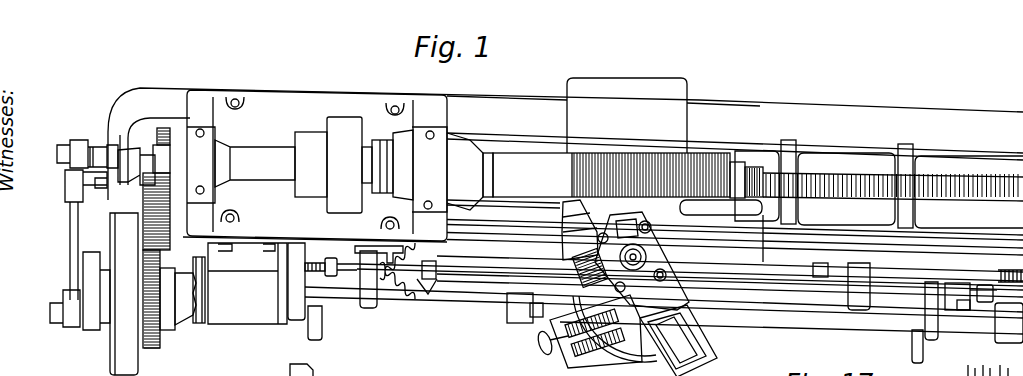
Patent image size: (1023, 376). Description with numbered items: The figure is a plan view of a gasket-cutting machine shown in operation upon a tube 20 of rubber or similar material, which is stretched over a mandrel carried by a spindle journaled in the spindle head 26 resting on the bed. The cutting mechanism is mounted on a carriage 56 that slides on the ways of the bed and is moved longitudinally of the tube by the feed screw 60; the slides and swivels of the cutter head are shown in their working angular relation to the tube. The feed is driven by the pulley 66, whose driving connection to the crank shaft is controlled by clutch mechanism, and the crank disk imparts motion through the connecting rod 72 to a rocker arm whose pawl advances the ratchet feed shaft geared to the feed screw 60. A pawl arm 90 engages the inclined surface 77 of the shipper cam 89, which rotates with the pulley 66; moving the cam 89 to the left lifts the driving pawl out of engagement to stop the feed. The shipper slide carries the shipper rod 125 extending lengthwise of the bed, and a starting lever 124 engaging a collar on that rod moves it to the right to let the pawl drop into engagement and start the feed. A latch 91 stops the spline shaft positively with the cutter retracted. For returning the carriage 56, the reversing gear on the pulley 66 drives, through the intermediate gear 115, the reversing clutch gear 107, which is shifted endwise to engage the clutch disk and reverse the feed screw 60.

The tube 20 is at (510, 163).
The spindle head 26 is at (278, 108).
The carriage 56 is at (627, 115).
The feed screw 60 is at (940, 175).
The pulley 66 is at (118, 343).
The connecting rod 72 is at (72, 244).
The inclined surface 77 is at (198, 282).
The shipper cam 89 is at (187, 313).
The arm 90 is at (173, 318).
The latch 91 is at (297, 280).
The reversing clutch gear 107 is at (165, 128).
The intermediate gear 115 is at (143, 203).
The starting lever 124 is at (933, 310).
The shipper rod 125 is at (490, 273).